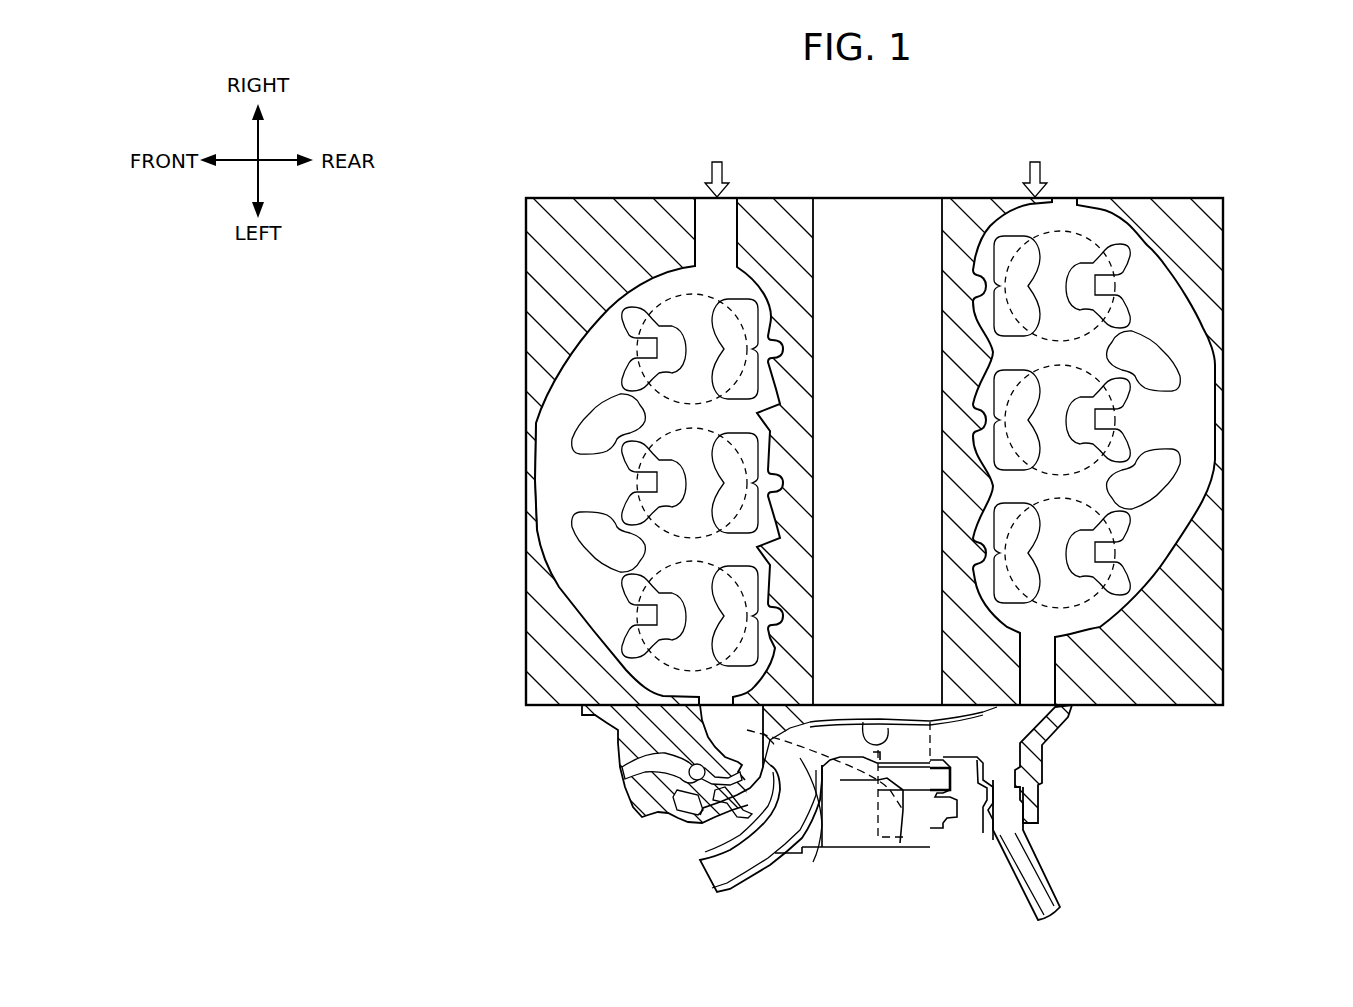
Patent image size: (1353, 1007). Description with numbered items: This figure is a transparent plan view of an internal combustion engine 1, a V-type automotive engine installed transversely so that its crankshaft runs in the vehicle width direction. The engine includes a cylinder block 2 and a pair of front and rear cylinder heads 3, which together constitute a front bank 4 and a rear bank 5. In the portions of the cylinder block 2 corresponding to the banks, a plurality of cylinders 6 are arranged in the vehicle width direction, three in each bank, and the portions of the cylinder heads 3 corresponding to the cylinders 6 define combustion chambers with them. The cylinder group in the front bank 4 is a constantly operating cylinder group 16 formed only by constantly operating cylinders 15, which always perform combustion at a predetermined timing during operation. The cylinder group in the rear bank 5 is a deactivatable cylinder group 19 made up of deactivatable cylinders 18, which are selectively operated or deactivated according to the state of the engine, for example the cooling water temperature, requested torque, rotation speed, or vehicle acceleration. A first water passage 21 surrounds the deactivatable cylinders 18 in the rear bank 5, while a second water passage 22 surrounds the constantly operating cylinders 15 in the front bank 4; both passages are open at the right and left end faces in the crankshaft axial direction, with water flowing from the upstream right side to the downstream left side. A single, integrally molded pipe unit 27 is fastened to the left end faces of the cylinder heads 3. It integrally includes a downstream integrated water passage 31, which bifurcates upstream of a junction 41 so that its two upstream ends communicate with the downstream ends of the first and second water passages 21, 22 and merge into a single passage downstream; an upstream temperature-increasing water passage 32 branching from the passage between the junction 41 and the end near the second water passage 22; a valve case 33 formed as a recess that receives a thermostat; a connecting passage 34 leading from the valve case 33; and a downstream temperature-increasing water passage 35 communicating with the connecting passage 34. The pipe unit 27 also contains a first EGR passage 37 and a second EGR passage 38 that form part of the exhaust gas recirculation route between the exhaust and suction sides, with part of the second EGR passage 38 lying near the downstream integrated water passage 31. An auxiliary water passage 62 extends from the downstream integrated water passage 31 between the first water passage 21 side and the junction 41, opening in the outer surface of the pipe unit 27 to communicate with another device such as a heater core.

The internal combustion engine 1 is at (1243, 212).
The cylinder block 2 is at (883, 215).
The cylinder head 3 is at (785, 225).
The front bank 4 is at (585, 192).
The rear bank 5 is at (1165, 192).
The cylinder 6 is at (690, 292).
The constantly operating cylinder 15 is at (652, 305).
The constantly operating cylinder group 16 is at (605, 350).
The deactivatable cylinder 18 is at (1073, 235).
The deactivatable cylinder group 19 is at (1147, 292).
The first water passage 21 is at (1197, 487).
The second water passage 22 is at (557, 552).
The pipe unit 27 is at (1047, 770).
The downstream integrated water passage 31 is at (775, 852).
The upstream temperature-increasing water passage 32 is at (953, 785).
The valve case 33 is at (828, 820).
The connecting passage 34 is at (875, 722).
The downstream temperature-increasing water passage 35 is at (965, 822).
The first EGR passage 37 is at (630, 765).
The second EGR passage 38 is at (740, 812).
The junction 41 is at (858, 800).
The auxiliary water passage 62 is at (1030, 862).